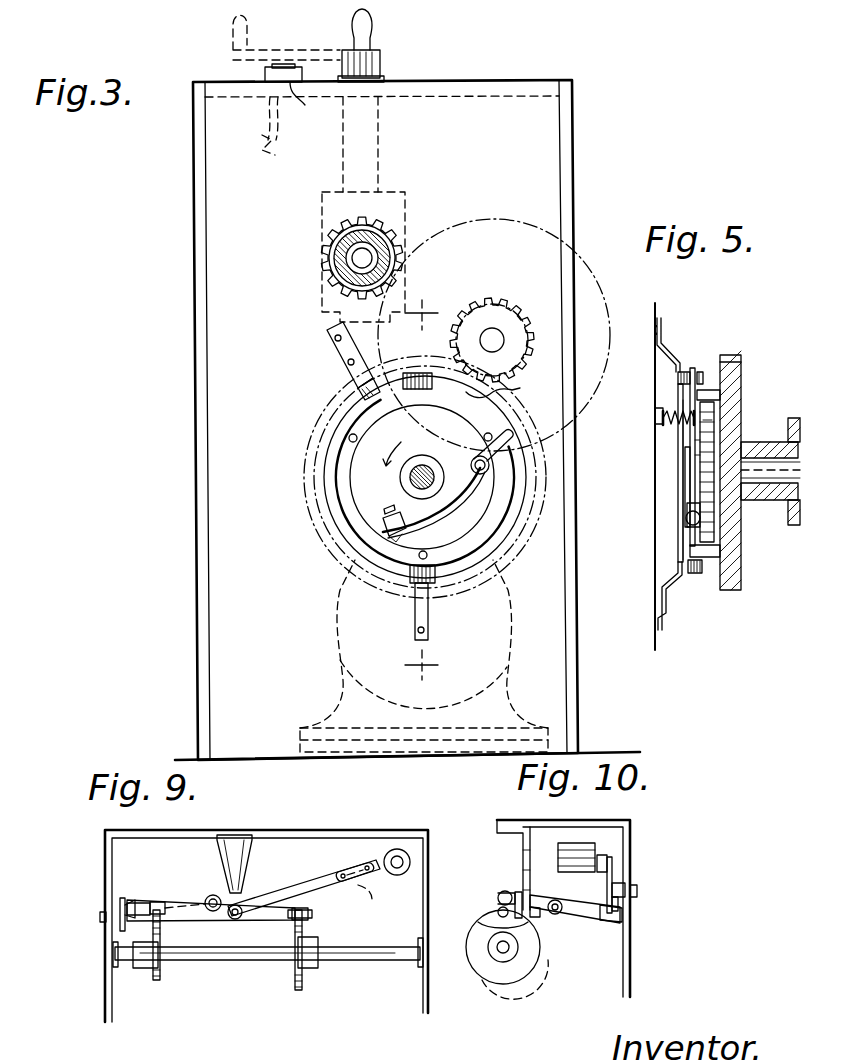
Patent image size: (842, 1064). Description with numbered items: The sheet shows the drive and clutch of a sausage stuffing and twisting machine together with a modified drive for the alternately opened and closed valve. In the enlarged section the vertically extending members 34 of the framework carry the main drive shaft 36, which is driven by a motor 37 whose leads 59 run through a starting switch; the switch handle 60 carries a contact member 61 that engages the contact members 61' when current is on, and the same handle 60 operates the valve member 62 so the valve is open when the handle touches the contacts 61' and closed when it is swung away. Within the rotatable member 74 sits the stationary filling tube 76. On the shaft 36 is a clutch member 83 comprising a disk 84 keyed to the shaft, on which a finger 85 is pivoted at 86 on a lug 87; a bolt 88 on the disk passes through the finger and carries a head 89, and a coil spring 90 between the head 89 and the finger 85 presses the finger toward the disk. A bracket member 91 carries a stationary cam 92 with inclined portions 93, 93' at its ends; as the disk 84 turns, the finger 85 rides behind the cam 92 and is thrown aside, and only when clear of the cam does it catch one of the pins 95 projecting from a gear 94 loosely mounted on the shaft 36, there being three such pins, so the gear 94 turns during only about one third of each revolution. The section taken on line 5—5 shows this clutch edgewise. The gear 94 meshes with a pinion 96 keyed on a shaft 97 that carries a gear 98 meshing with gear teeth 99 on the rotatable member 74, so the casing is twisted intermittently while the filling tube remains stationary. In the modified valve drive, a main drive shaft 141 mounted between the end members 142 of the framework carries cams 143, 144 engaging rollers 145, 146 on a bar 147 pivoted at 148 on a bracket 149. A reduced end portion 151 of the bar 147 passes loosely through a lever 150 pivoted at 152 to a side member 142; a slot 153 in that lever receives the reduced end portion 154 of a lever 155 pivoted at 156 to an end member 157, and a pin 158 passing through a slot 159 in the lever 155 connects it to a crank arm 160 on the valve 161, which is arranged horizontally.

In FIG. 3, the vertically extending members 34 is at (567, 655).
In FIG. 3, the main drive shaft 36 is at (410, 478).
In FIG. 5, the main drive shaft 36 is at (775, 500).
In FIG. 3, the motor 37 is at (345, 660).
In FIG. 5, the motor 37 is at (626, 484).
In FIG. 3, the leads 59 is at (262, 137).
In FIG. 3, the handle 60 is at (300, 52).
In FIG. 3, the contact member 61 is at (286, 46).
In FIG. 3, the contact members 61' is at (283, 111).
In FIG. 3, the valve member 62 is at (368, 160).
In FIG. 3, the rotatable member 74 is at (342, 272).
In FIG. 3, the stationary filling tube 76 is at (336, 262).
In FIG. 5, the clutch member 83 is at (685, 460).
In FIG. 3, the disk 84 is at (370, 510).
In FIG. 5, the disk 84 is at (707, 430).
In FIG. 3, the finger 85 is at (455, 495).
In FIG. 5, the finger 85 is at (695, 463).
In FIG. 5, the pivot 86 is at (680, 527).
In FIG. 5, the lug 87 is at (693, 527).
In FIG. 5, the bolt 88 is at (672, 425).
In FIG. 3, the head 89 is at (490, 470).
In FIG. 5, the head 89 is at (655, 417).
In FIG. 5, the coil spring 90 is at (678, 408).
In FIG. 3, the bracket member 91 is at (340, 350).
In FIG. 5, the bracket member 91 is at (668, 352).
In FIG. 3, the stationary cam 92 is at (350, 540).
In FIG. 5, the stationary cam 92 is at (692, 366).
In FIG. 3, the inclined portions 93 is at (420, 356).
In FIG. 5, the inclined portions 93 is at (712, 466).
In FIG. 3, the friction block 93' is at (462, 587).
In FIG. 3, the gear 94 is at (508, 390).
In FIG. 5, the gear 94 is at (707, 402).
In FIG. 3, the pins 95 is at (349, 437).
In FIG. 5, the pins 95 is at (706, 392).
In FIG. 3, the pinion 96 is at (518, 345).
In FIG. 3, the shaft 97 is at (490, 328).
In FIG. 3, the gear 98 is at (405, 242).
In FIG. 3, the gear teeth 99 is at (385, 228).
In FIG. 3, the section line 5 is at (425, 490).
In FIG. 9, the main drive shaft 141 is at (272, 963).
In FIG. 10, the main drive shaft 141 is at (508, 955).
In FIG. 9, the end members 142 is at (106, 896).
In FIG. 10, the end members 142 is at (563, 908).
In FIG. 9, the cam 143 is at (160, 965).
In FIG. 10, the cam 143 is at (475, 935).
In FIG. 9, the cam 144 is at (302, 980).
In FIG. 10, the cam 144 is at (500, 982).
In FIG. 9, the roller 145 is at (162, 903).
In FIG. 10, the roller 145 is at (498, 898).
In FIG. 9, the roller 146 is at (312, 914).
In FIG. 10, the roller 146 is at (498, 912).
In FIG. 9, the pivoted bar 147 is at (258, 910).
In FIG. 10, the pivoted bar 147 is at (516, 892).
In FIG. 9, the pivot 148 is at (242, 905).
In FIG. 10, the pivot 148 is at (540, 917).
In FIG. 9, the bracket 149 is at (237, 855).
In FIG. 10, the bracket 149 is at (525, 845).
In FIG. 9, the lever 150 is at (140, 902).
In FIG. 10, the lever 150 is at (595, 920).
In FIG. 9, the reduced end portion 151 is at (122, 896).
In FIG. 9, the pivot 152 is at (100, 917).
In FIG. 10, the pivot 152 is at (565, 893).
In FIG. 10, the slot 153 is at (622, 918).
In FIG. 9, the reduced end portion 154 is at (126, 965).
In FIG. 9, the lever 155 is at (315, 880).
In FIG. 10, the lever 155 is at (620, 884).
In FIG. 10, the pivot 156 is at (630, 890).
In FIG. 10, the end member 157 is at (623, 912).
In FIG. 9, the pin 158 is at (345, 870).
In FIG. 10, the pin 158 is at (612, 875).
In FIG. 9, the slot 159 is at (390, 895).
In FIG. 9, the crank arm 160 is at (388, 858).
In FIG. 10, the crank arm 160 is at (607, 860).
In FIG. 9, the valve 161 is at (405, 858).
In FIG. 10, the valve 161 is at (585, 845).